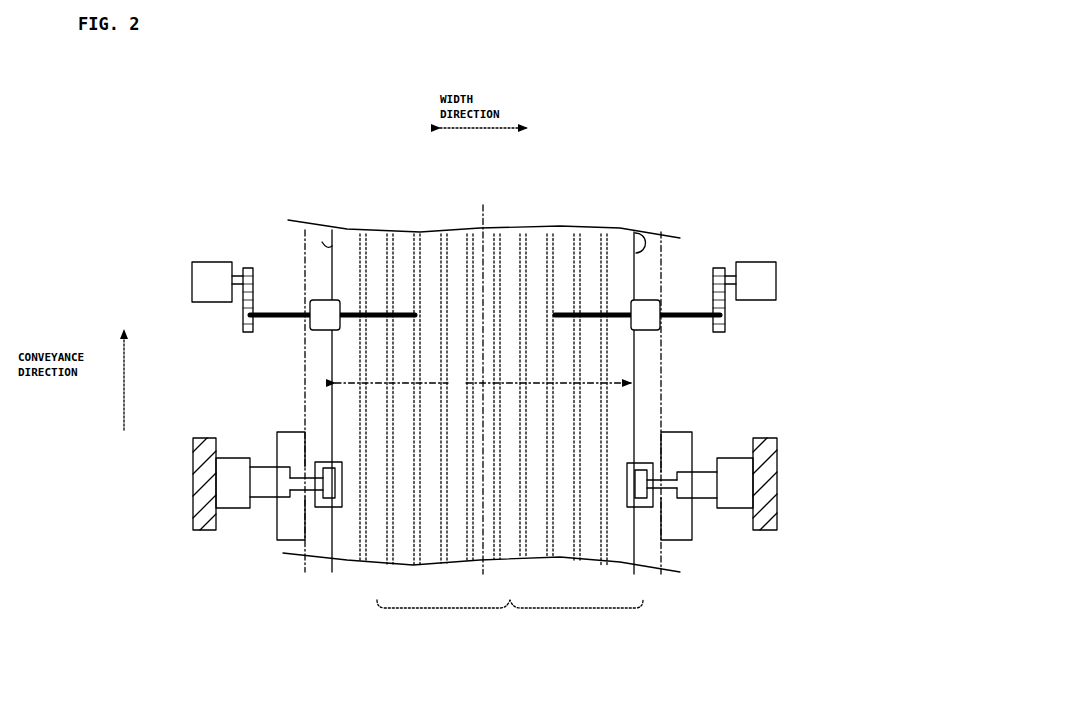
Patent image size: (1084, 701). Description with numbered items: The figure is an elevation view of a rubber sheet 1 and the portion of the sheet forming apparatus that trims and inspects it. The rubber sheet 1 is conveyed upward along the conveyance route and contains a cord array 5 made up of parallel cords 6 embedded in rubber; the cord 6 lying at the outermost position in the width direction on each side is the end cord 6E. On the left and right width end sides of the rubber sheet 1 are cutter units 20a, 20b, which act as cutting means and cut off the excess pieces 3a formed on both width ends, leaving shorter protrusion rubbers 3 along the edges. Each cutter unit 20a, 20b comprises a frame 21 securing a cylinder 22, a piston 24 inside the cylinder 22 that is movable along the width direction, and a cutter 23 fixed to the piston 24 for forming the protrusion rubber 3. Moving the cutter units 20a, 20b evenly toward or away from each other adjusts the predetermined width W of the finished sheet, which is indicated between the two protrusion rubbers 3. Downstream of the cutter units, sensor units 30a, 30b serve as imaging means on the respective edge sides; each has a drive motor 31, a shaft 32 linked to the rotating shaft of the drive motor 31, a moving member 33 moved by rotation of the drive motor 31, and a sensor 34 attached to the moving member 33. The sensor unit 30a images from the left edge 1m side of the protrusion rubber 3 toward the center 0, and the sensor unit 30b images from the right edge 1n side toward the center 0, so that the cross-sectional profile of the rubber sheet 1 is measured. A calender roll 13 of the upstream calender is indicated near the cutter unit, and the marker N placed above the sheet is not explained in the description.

The rubber sheet 1 is at (348, 232).
The left edge 1m is at (322, 242).
The right edge 1n is at (648, 233).
The protrusion rubber 3 is at (337, 412).
The excess piece 3a is at (313, 553).
The cord array 5 is at (510, 619).
The cord 6 is at (394, 574).
The end cord 6E is at (368, 574).
The calender roll 13 is at (283, 450).
The cutter unit 20a is at (241, 486).
The cutter unit 20b is at (776, 437).
The frame 21 is at (195, 510).
The cylinder 22 is at (233, 483).
The cutter 23 is at (323, 462).
The piston 24 is at (305, 483).
The sensor unit 30a is at (440, 292).
The sensor unit 30b is at (776, 262).
The drive motor 31 is at (212, 272).
The shaft 32 is at (262, 320).
The moving member 33 is at (312, 322).
The sensor 34 is at (322, 300).
The center 0 is at (483, 382).
The web width region N is at (540, 205).
The width W is at (483, 383).